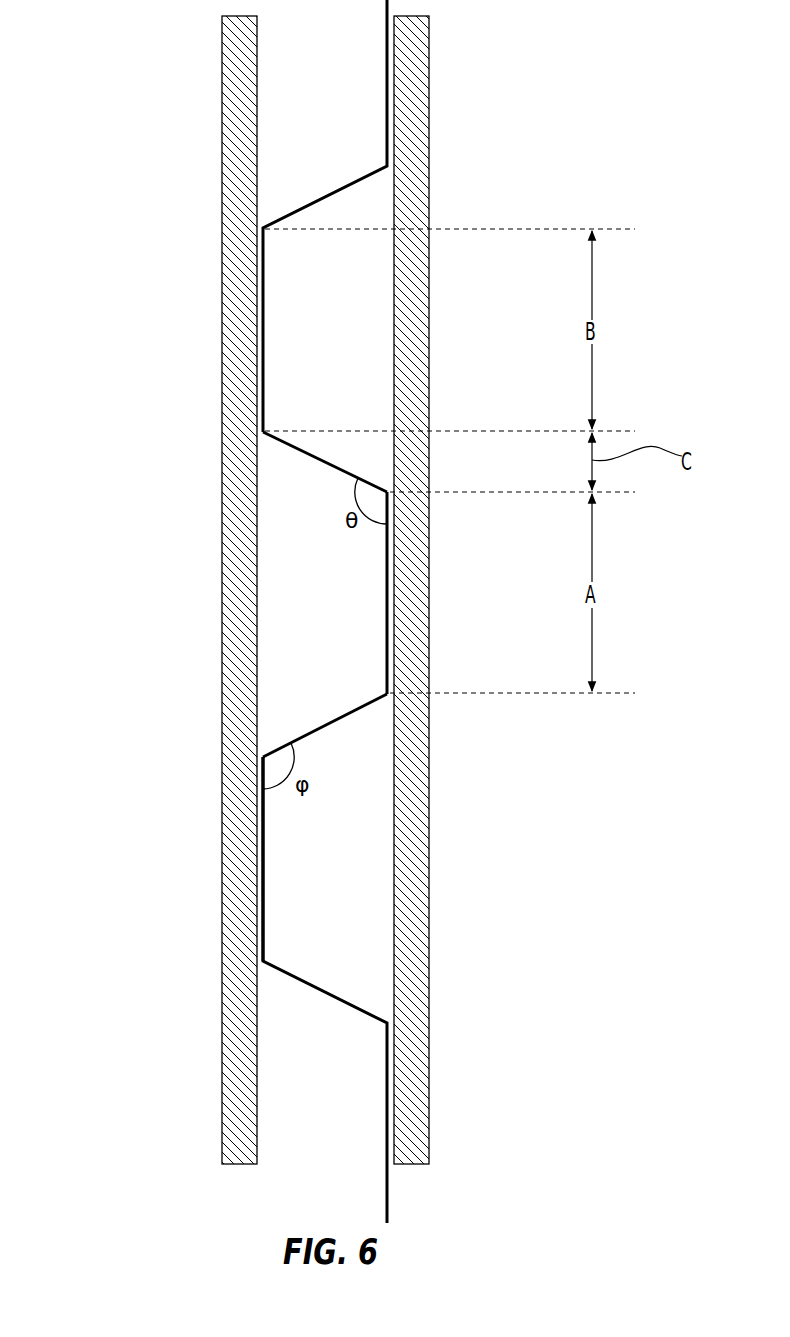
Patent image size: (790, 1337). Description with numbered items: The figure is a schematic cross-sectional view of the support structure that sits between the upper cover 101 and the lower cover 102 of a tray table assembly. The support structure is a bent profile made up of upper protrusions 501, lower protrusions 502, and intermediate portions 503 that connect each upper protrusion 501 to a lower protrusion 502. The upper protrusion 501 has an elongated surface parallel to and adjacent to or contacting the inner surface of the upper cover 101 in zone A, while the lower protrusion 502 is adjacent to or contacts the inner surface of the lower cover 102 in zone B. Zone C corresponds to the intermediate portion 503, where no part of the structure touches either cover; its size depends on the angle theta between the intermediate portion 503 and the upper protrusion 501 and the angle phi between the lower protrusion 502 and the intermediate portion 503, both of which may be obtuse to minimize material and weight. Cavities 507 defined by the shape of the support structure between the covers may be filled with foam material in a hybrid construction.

The upper cover 101 is at (432, 1115).
The lower cover 102 is at (219, 1112).
The upper protrusion 501 is at (384, 614).
The lower protrusion 502 is at (268, 858).
The intermediate portion 503 is at (295, 451).
The cavities 507 is at (325, 686).